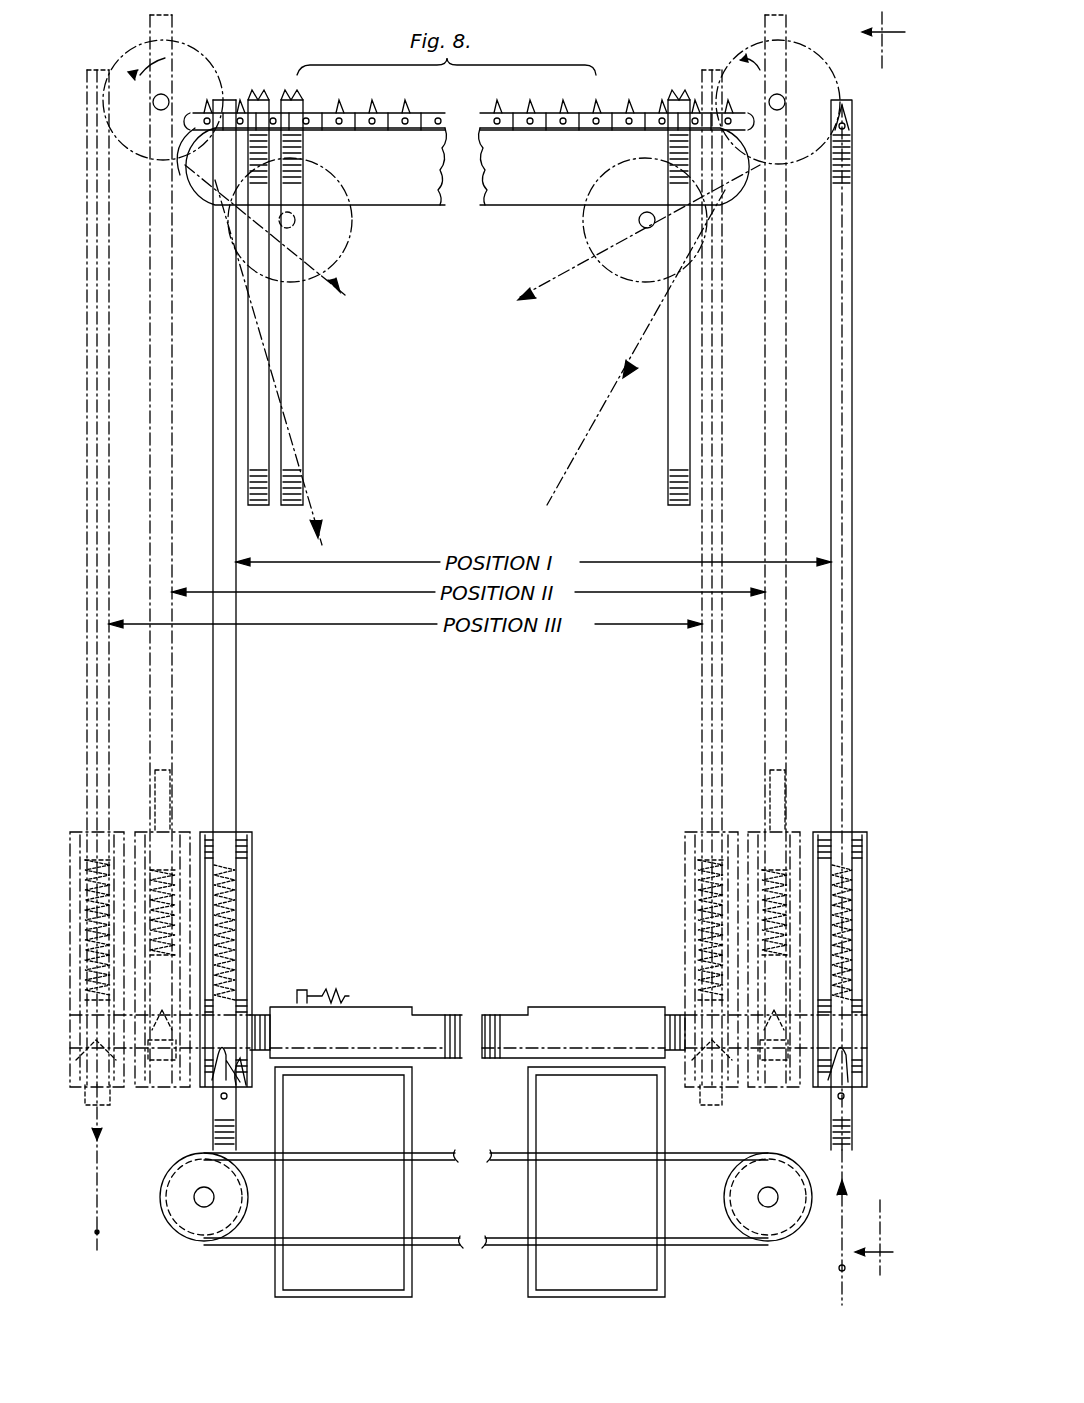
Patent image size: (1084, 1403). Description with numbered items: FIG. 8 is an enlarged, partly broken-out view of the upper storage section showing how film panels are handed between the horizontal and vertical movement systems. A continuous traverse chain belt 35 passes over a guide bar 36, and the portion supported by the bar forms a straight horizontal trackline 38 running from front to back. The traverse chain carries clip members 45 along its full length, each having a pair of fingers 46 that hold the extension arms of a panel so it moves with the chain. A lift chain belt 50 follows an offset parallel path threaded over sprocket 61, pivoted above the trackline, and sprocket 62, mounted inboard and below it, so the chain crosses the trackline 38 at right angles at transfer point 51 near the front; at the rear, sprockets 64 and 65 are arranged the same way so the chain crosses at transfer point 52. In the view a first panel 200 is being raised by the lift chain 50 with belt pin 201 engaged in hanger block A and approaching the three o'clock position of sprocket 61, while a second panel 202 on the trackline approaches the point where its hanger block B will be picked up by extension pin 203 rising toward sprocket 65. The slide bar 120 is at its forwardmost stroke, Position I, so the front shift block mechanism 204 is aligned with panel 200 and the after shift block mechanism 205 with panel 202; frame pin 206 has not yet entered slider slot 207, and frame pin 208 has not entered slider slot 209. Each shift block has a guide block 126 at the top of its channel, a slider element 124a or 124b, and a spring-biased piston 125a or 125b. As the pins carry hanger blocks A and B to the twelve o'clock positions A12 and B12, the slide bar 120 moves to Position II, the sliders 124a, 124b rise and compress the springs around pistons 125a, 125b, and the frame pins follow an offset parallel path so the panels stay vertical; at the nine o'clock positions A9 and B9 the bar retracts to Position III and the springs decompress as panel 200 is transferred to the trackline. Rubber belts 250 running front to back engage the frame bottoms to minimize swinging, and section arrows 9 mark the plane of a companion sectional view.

The section line 9- 9 is at (880, 641).
The traverse chain belt 35 is at (350, 300).
The guide bar 36 is at (467, 183).
The horizontal trackline 38 is at (616, 100).
The clip members 45 is at (368, 100).
The fingers 46 is at (528, 110).
The lift chain belt 50 is at (230, 162).
The transfer point 51 is at (715, 112).
The transfer point 52 is at (228, 133).
The sprocket 61 is at (838, 68).
The sprocket 62 is at (584, 226).
The sprocket 64 is at (352, 238).
The sprocket 65 is at (213, 60).
The slide bar 120 is at (448, 1010).
The slider element 124a is at (858, 995).
The slider element 124b is at (185, 965).
The piston 125a is at (775, 768).
The piston 125b is at (160, 768).
The guide block 126 is at (240, 830).
The first panel 200 is at (852, 528).
The belt pin 201 is at (846, 140).
The second panel 202 is at (238, 686).
The extension pin 203 is at (213, 143).
The front shift block mechanism 204 is at (878, 872).
The after shift block mechanism 205 is at (258, 898).
The frame pin 206 is at (846, 1098).
The slider slot 207 is at (845, 1086).
The frame pin 208 is at (220, 1098).
The slider slot 209 is at (259, 1089).
The rubber belts 250 is at (465, 1150).
The hanger block A is at (850, 114).
The hanger block B is at (216, 100).
The nine o'clock position of hanger block A A9 is at (701, 78).
The twelve o'clock position of hanger block A A12 is at (788, 20).
The nine o'clock position of hanger block B B9 is at (97, 62).
The twelve o'clock position of hanger block B B12 is at (156, 12).